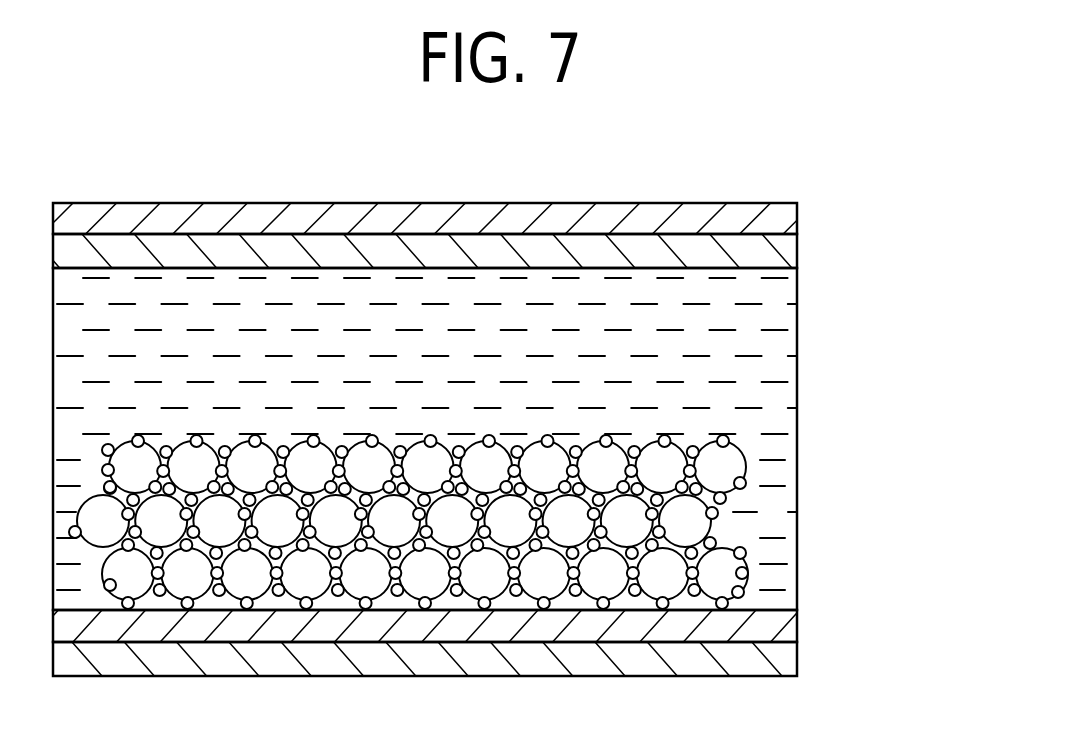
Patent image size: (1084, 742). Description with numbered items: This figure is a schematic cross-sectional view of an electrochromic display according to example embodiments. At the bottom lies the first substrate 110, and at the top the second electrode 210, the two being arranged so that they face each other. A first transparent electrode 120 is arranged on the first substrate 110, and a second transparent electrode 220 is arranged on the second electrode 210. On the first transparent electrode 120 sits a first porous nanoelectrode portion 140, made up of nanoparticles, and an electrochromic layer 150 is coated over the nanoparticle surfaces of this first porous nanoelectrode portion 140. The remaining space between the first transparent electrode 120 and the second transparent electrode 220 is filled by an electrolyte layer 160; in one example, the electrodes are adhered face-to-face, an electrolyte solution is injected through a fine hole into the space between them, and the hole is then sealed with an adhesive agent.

The second electrode 210 is at (778, 220).
The second transparent electrode 220 is at (797, 247).
The electrolyte layer 160 is at (760, 320).
The electrochromic layer 150 is at (727, 438).
The first porous nanoelectrode portion 140 is at (737, 462).
The first transparent electrode 120 is at (778, 623).
The first substrate 110 is at (783, 660).